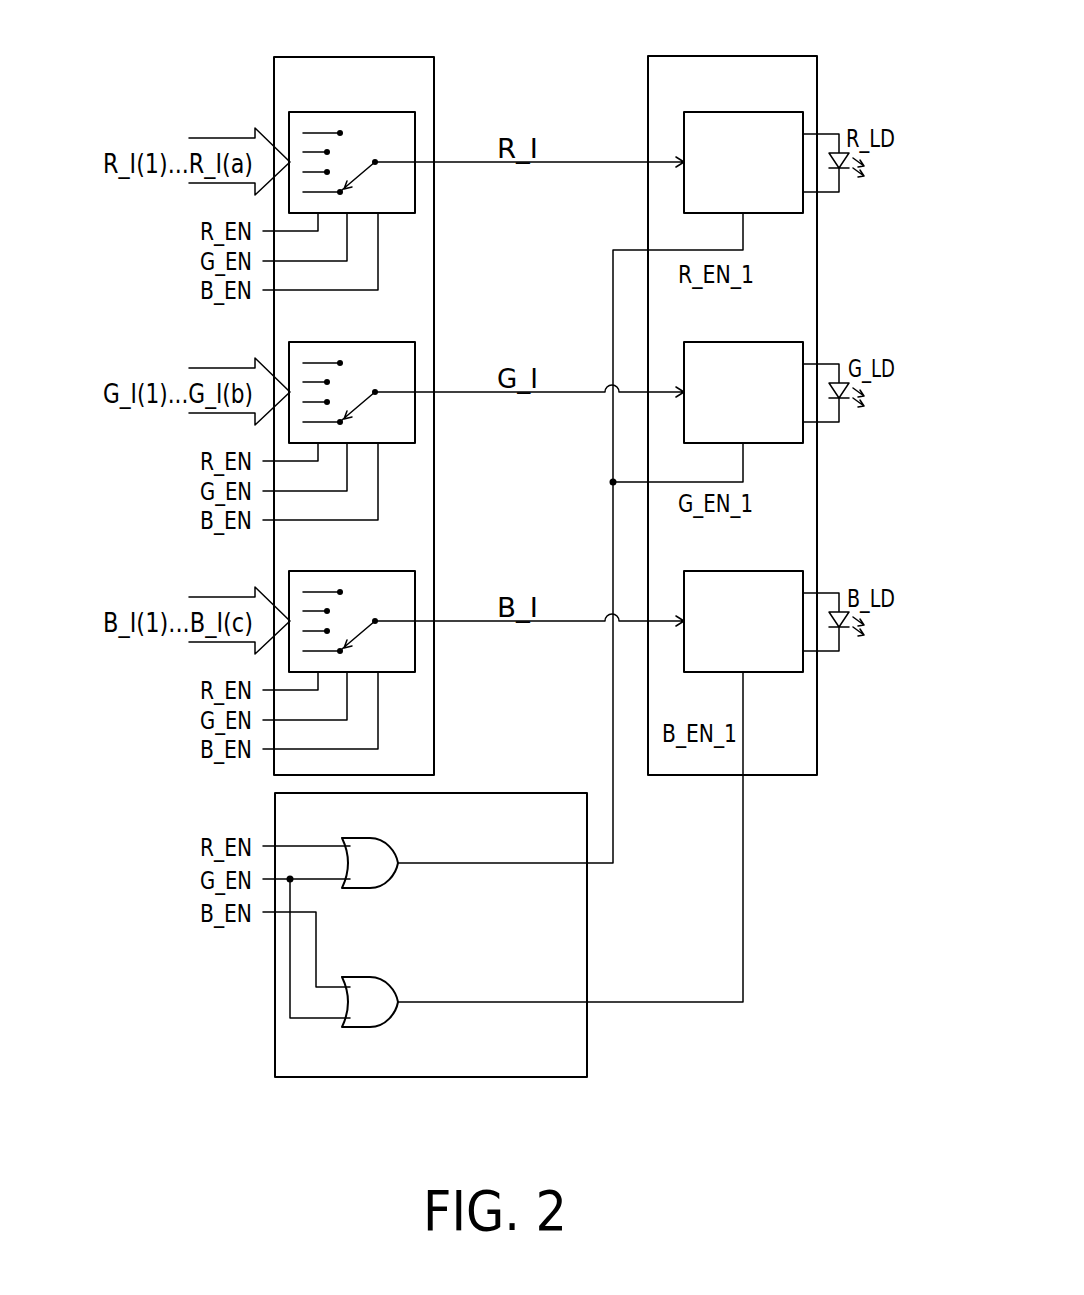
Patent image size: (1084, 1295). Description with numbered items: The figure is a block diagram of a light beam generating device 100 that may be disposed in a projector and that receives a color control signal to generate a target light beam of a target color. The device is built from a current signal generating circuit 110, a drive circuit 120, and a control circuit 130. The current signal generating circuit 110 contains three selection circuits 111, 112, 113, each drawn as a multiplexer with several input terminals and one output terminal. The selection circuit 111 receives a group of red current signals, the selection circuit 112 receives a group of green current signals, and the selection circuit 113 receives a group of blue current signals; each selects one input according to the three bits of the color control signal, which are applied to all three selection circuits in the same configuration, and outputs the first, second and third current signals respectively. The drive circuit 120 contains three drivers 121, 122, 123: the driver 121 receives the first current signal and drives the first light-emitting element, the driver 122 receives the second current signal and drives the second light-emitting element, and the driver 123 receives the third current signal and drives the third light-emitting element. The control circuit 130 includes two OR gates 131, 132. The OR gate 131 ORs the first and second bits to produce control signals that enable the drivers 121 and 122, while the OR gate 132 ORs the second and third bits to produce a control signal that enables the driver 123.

The light beam generating device 100 is at (845, 1107).
The current signal generating circuit 110 is at (380, 56).
The selection circuit 111 is at (352, 112).
The selection circuit 112 is at (352, 342).
The selection circuit 113 is at (352, 571).
The drive circuit 120 is at (762, 56).
The driver 121 is at (738, 112).
The driver 122 is at (738, 342).
The driver 123 is at (738, 571).
The control circuit 130 is at (520, 793).
The OR gate 131 is at (393, 848).
The OR gate 132 is at (393, 987).